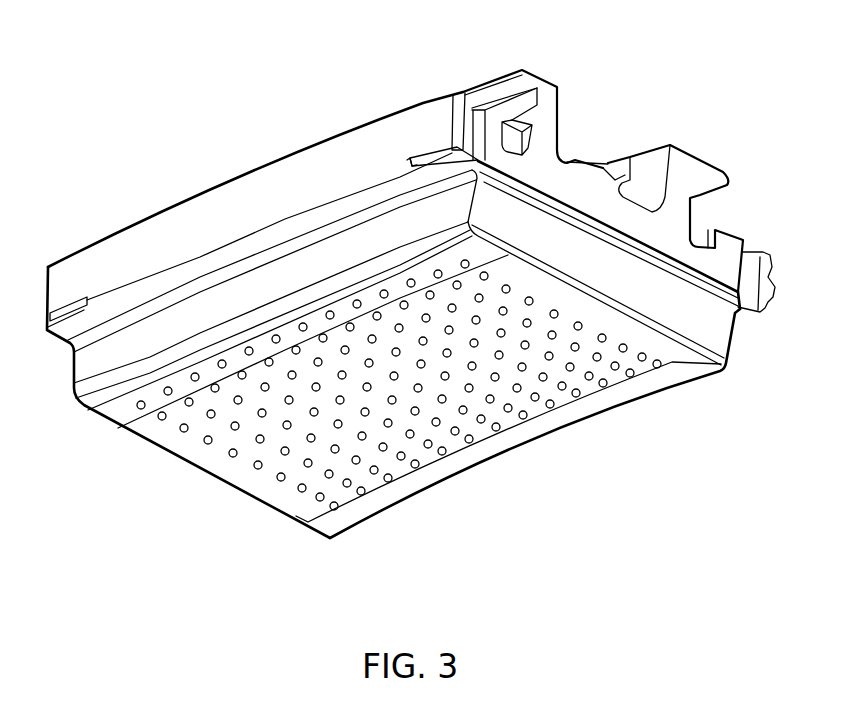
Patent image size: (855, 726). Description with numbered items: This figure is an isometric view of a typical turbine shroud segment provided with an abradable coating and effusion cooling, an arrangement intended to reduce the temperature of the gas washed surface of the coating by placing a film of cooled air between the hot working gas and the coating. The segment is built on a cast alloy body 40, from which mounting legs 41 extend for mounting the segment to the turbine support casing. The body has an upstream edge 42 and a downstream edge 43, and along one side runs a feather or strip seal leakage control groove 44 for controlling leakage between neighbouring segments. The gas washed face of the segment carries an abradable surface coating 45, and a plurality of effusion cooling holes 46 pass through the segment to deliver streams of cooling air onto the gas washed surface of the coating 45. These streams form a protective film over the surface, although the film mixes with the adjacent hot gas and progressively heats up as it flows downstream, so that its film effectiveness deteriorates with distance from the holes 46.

The cast alloy body 40 is at (495, 205).
The mounting legs 41 is at (693, 152).
The upstream edge 42 is at (303, 280).
The downstream edge 43 is at (514, 452).
The feather or strip seal leakage control groove 44 is at (705, 283).
The abradable surface coating 45 is at (403, 398).
The effusion cooling holes 46 is at (162, 416).